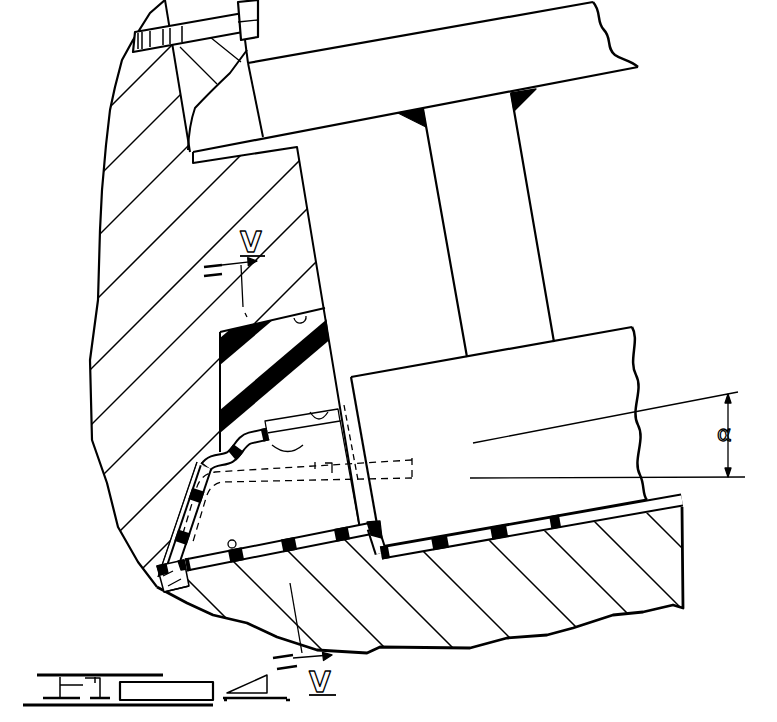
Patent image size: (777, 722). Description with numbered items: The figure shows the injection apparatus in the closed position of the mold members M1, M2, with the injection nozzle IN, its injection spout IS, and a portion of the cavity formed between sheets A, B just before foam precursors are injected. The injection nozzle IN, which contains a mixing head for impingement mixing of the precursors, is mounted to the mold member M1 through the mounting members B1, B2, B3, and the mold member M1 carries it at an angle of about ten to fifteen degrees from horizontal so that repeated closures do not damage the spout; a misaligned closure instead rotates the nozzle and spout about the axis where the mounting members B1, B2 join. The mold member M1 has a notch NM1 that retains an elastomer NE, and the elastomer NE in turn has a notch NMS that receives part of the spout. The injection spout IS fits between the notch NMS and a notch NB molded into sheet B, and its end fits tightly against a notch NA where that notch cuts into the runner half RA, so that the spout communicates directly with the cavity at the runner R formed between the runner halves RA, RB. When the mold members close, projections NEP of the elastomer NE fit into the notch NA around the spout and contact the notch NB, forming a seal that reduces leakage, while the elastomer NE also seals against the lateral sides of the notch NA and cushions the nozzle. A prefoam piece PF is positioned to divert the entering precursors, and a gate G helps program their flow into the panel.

The mounting member B1 is at (174, 72).
The mounting member B2 is at (593, 63).
The mounting member B3 is at (518, 188).
The mold member M1 is at (97, 347).
The mold member M2 is at (382, 642).
The elastomer NE is at (220, 348).
The notch NM1 is at (333, 323).
The notch NMS is at (342, 378).
The runner half RA is at (220, 428).
The runner R is at (258, 500).
The runner half RB is at (356, 458).
The projections NEP is at (321, 492).
The gate G is at (210, 455).
The notch NA is at (302, 511).
The sheet A is at (170, 533).
The prefoam piece PF is at (157, 575).
The notch NB is at (240, 560).
The injection spout IS is at (316, 540).
The injection nozzle IN is at (458, 548).
The sheet B is at (207, 583).